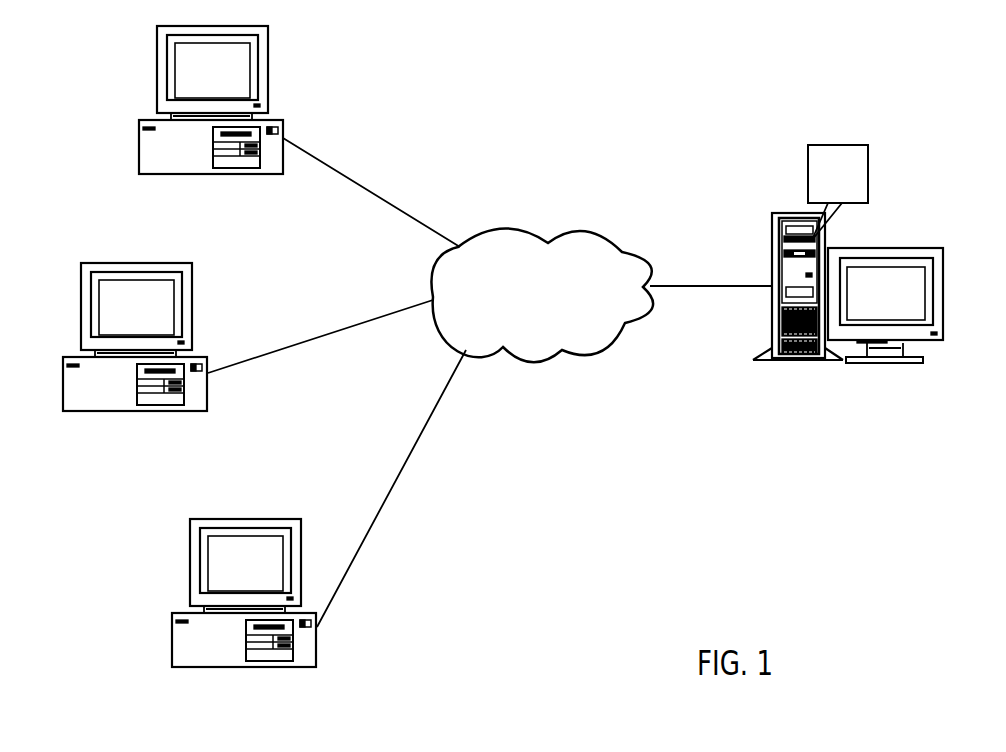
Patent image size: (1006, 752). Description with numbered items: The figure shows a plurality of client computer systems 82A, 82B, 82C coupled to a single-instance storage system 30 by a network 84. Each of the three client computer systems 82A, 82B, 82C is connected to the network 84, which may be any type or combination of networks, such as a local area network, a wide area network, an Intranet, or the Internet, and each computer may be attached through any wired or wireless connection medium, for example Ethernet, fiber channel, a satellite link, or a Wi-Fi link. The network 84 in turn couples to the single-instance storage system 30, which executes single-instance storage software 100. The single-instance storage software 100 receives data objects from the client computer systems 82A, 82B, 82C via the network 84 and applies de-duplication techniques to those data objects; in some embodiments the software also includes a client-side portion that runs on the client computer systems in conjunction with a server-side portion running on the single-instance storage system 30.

The client computer system 82A is at (210, 130).
The client computer system 82B is at (135, 369).
The client computer system 82C is at (244, 623).
The network 84 is at (490, 382).
The single-instance storage system 30 is at (848, 319).
The single-instance storage software 100 is at (838, 192).